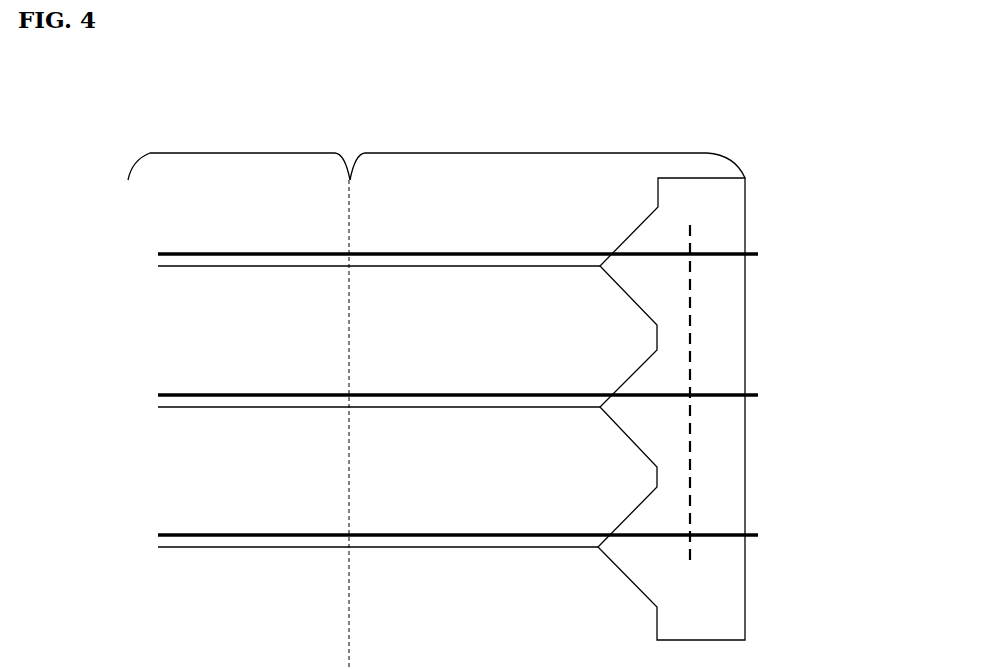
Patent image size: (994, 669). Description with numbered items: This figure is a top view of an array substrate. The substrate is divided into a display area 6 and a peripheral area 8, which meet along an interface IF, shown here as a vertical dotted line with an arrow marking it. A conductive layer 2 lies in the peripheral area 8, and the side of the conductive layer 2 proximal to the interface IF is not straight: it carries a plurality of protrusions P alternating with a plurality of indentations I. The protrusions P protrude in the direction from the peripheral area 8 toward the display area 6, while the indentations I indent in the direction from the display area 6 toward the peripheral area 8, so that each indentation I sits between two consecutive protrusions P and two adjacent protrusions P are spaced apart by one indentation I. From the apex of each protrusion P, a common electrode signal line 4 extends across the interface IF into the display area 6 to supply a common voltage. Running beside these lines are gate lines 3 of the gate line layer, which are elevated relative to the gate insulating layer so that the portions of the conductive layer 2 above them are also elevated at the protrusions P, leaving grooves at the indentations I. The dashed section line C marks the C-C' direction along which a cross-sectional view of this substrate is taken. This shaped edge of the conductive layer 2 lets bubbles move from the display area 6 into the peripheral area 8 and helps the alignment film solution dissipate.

The conductive layer 2 is at (732, 208).
The gate line 3 is at (757, 533).
The common electrode signal line 4 is at (440, 547).
The display area 6 is at (240, 153).
The peripheral area 8 is at (547, 153).
The interface IF is at (350, 168).
The protrusion P is at (597, 268).
The indentation I is at (644, 339).
The C-C' direction C is at (701, 397).